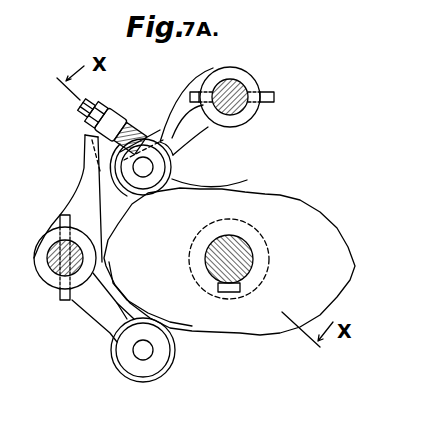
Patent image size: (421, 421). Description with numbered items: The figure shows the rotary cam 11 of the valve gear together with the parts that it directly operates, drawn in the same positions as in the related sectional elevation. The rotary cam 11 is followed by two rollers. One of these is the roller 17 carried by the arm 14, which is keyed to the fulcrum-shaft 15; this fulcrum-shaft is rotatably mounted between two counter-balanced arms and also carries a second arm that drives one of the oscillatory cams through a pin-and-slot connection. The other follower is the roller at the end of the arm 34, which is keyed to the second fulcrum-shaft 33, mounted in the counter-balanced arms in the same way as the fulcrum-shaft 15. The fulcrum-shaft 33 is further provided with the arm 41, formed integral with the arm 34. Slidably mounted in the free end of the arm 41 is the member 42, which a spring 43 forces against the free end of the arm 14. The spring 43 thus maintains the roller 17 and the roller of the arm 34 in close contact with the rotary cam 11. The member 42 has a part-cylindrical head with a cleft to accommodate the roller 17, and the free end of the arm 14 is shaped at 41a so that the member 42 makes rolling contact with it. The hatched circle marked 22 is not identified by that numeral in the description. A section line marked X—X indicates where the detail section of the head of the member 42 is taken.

The rotary cam 11 is at (313, 232).
The arm 14 is at (190, 128).
The fulcrum-shaft 15 is at (241, 111).
The roller 17 is at (220, 180).
The main shaft 22 is at (215, 268).
The fulcrum-shaft 33 is at (52, 277).
The arm 34 is at (93, 303).
The arm 41 is at (108, 116).
The shaped free end 41a is at (133, 144).
The member 42 is at (128, 196).
The spring 43 is at (118, 140).